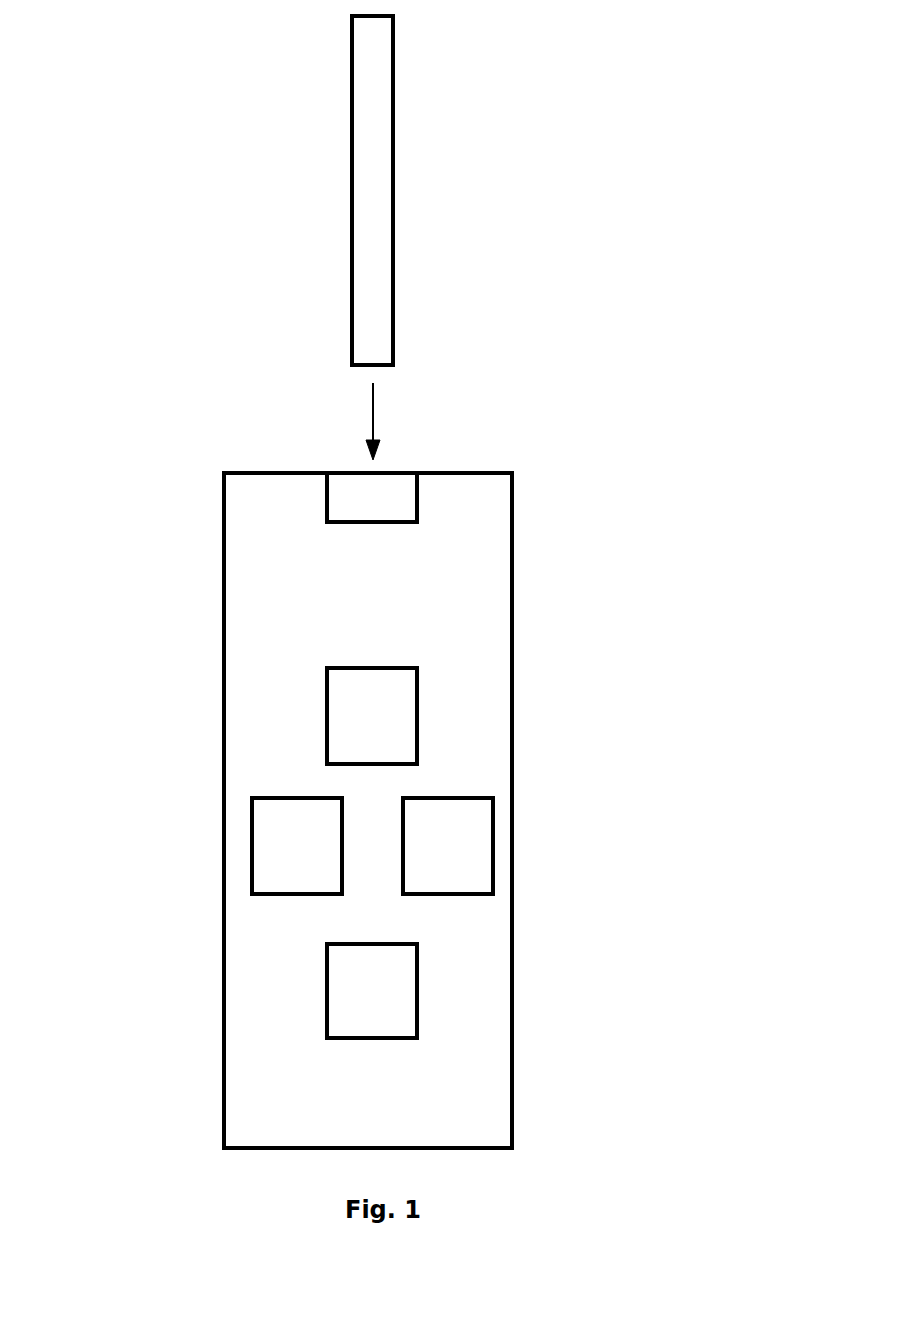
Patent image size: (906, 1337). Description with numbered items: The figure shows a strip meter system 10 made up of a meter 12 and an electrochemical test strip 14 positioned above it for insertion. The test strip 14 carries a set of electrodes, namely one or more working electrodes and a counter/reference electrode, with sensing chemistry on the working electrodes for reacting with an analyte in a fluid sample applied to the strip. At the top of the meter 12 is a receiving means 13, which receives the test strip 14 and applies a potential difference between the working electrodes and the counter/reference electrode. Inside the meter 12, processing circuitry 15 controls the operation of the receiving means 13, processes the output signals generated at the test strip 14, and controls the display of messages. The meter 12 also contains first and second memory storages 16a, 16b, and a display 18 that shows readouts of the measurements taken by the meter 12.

The strip meter system 10 is at (638, 378).
The meter 12 is at (514, 728).
The receiving means 13 is at (375, 487).
The electrochemical test strip 14 is at (393, 201).
The processing circuitry 15 is at (353, 712).
The first memory storage 16a is at (275, 836).
The second memory storage 16b is at (456, 857).
The display 18 is at (382, 1002).